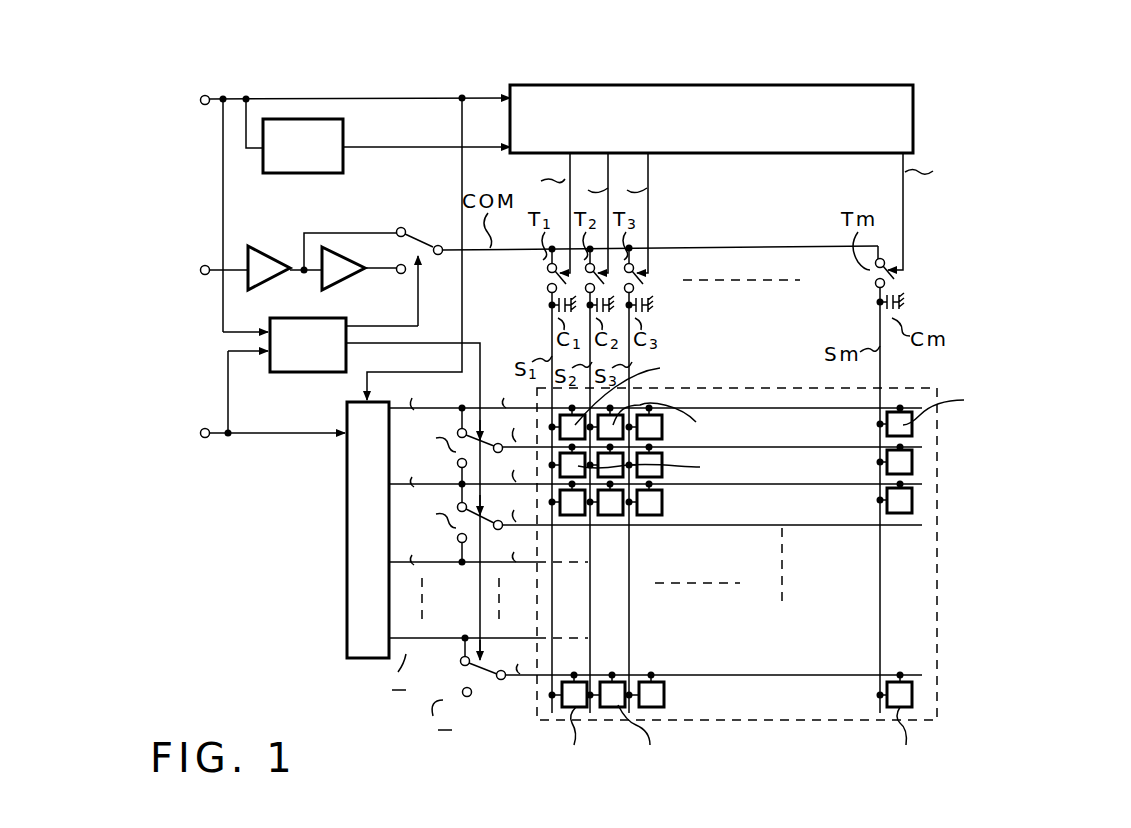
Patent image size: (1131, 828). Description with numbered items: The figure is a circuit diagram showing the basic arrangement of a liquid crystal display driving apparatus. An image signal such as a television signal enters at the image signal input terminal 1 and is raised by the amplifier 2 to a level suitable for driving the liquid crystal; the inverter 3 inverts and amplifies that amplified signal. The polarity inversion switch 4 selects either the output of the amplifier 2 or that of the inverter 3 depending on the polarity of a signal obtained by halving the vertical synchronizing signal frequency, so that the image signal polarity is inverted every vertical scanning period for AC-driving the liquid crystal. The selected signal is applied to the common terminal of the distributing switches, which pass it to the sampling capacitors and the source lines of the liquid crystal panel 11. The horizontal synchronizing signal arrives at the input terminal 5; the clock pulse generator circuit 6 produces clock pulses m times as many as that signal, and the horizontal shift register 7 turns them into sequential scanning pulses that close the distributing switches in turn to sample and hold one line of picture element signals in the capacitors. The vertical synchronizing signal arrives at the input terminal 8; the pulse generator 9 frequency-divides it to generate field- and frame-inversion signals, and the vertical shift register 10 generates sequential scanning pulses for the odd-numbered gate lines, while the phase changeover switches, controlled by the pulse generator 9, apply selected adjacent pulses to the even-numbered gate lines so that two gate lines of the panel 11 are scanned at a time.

The image signal input terminal 1 is at (205, 267).
The amplifier 2 is at (265, 246).
The inverter 3 is at (345, 244).
The polarity inversion switch 4 is at (425, 240).
The input terminal for a horizontal synchronizing signal 5 is at (200, 101).
The clock pulse generator circuit 6 is at (345, 126).
The horizontal shift register 7 is at (915, 113).
The input terminal for a vertical synchronizing signal 8 is at (202, 431).
The pulse generator 9 is at (298, 373).
The vertical shift register 10 is at (346, 565).
The liquid crystal panel 11 is at (938, 508).